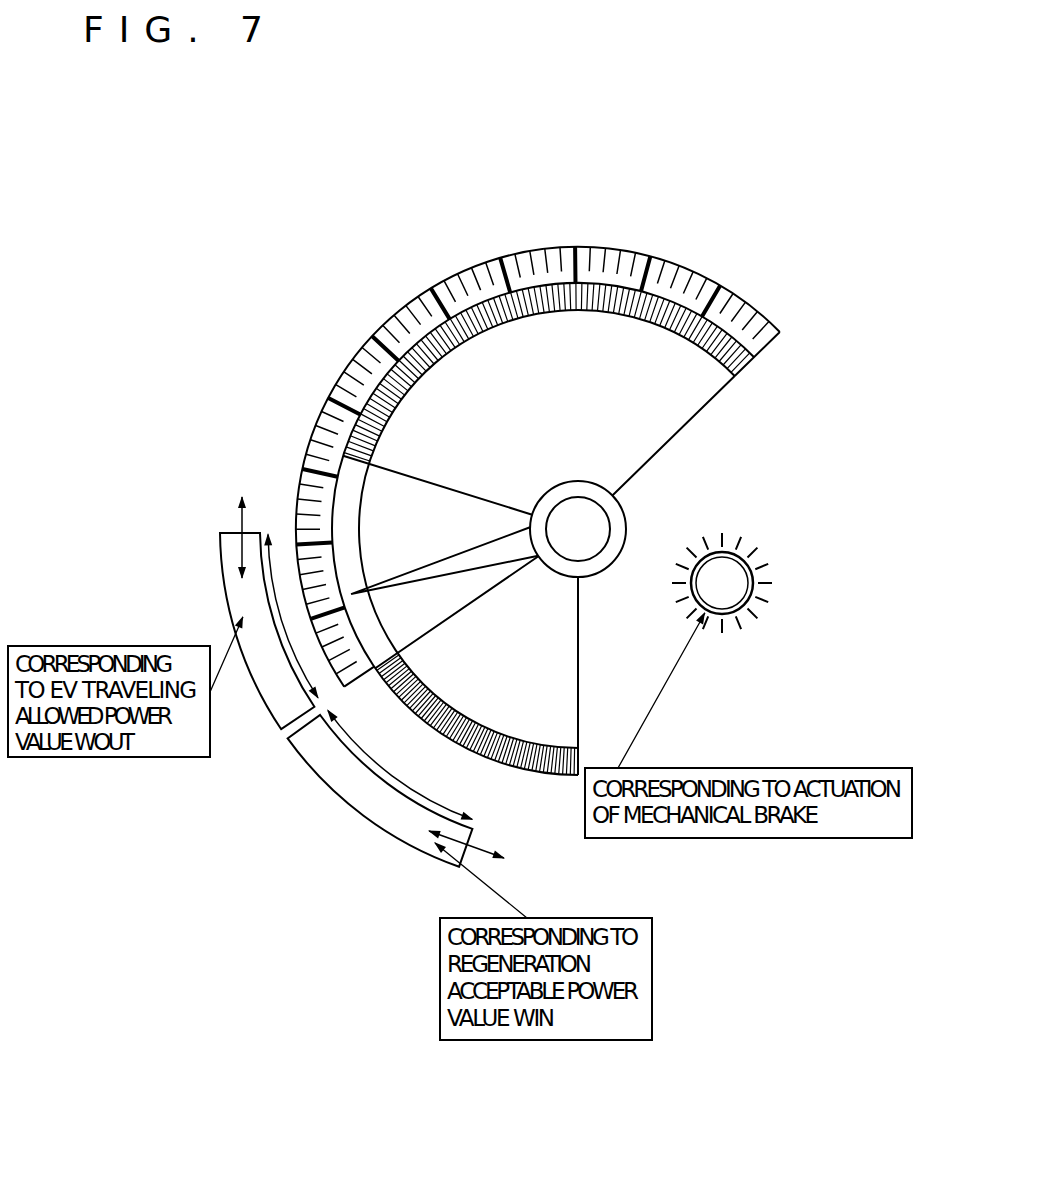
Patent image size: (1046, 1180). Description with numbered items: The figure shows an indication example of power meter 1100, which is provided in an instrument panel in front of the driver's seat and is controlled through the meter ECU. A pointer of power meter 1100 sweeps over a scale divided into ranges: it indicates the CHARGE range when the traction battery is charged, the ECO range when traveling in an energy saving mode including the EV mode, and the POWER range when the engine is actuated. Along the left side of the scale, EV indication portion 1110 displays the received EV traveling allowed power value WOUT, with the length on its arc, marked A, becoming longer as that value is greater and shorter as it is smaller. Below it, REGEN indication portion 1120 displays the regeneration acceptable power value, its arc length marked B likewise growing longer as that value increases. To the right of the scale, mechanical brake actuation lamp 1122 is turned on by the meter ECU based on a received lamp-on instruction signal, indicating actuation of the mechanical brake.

The power meter 1100 is at (423, 230).
The EV indication portion 1110 is at (219, 552).
The REGEN indication portion 1120 is at (325, 782).
The mechanical brake actuation lamp 1122 is at (730, 600).